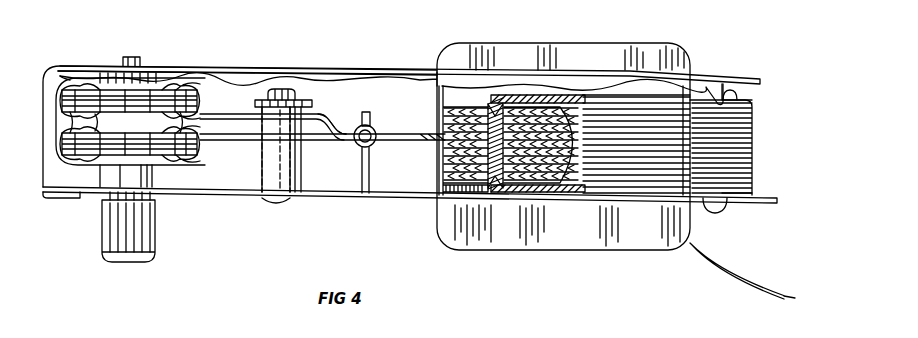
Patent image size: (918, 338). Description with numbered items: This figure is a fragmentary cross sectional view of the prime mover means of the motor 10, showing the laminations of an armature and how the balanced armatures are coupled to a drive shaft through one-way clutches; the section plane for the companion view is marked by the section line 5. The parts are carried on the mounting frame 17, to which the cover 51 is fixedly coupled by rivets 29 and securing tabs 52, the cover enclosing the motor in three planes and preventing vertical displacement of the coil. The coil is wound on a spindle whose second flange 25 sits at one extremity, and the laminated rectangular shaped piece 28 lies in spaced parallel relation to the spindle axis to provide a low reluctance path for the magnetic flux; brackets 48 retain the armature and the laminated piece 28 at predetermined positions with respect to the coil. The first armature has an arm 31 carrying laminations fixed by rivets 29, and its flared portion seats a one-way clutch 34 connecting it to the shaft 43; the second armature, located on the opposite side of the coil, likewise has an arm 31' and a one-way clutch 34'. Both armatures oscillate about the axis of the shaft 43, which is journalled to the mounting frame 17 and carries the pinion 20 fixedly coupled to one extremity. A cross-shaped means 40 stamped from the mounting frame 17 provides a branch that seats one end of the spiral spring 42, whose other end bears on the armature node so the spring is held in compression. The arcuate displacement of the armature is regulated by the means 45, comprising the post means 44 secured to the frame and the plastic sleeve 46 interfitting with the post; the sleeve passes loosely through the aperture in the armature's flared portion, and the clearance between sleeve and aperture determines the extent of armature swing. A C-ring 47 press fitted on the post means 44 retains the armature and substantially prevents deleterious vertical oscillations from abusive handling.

The section line 5- 5 is at (13, 122).
The device 10 is at (380, 47).
The mounting frame 17 is at (360, 198).
The pinion 20 is at (150, 223).
The second flange 25 is at (447, 60).
The laminated rectangular shaped piece 28 is at (750, 138).
The rivets 29 is at (724, 208).
The arm 31 is at (322, 161).
The arm 31' is at (362, 113).
The one-way clutch 34 is at (143, 149).
The one-way clutch 34' is at (153, 101).
The cross-shaped means 40 is at (371, 161).
The spiral spring 42 is at (358, 141).
The shaft 43 is at (157, 172).
The post means 44 is at (276, 93).
The means for regulating arcuate displacement 45 is at (336, 109).
The sleeve 46 is at (299, 160).
The C-ring 47 is at (312, 105).
The brackets 48 is at (752, 192).
The cover 51 is at (292, 73).
The securing tabs 52 is at (75, 200).